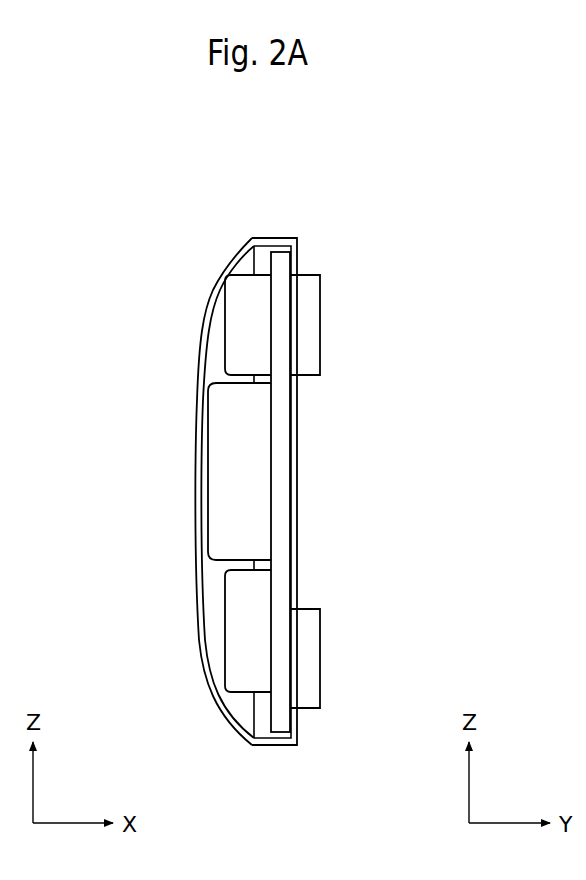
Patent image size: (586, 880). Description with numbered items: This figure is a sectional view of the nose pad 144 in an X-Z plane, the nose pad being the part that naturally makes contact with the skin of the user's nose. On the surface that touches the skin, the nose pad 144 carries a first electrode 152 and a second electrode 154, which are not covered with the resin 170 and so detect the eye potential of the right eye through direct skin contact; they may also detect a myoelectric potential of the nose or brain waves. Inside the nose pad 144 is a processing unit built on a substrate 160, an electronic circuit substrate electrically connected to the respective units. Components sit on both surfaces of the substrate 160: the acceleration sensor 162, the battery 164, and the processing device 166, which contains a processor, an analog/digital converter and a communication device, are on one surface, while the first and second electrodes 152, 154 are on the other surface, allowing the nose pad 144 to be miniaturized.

The nose pad 144 is at (328, 217).
The first electrode 152 is at (323, 322).
The second electrode 154 is at (325, 666).
The substrate 160 is at (293, 256).
The acceleration sensor 162 is at (222, 319).
The battery 164 is at (207, 487).
The processing device 166 is at (225, 643).
The resin 170 is at (193, 525).